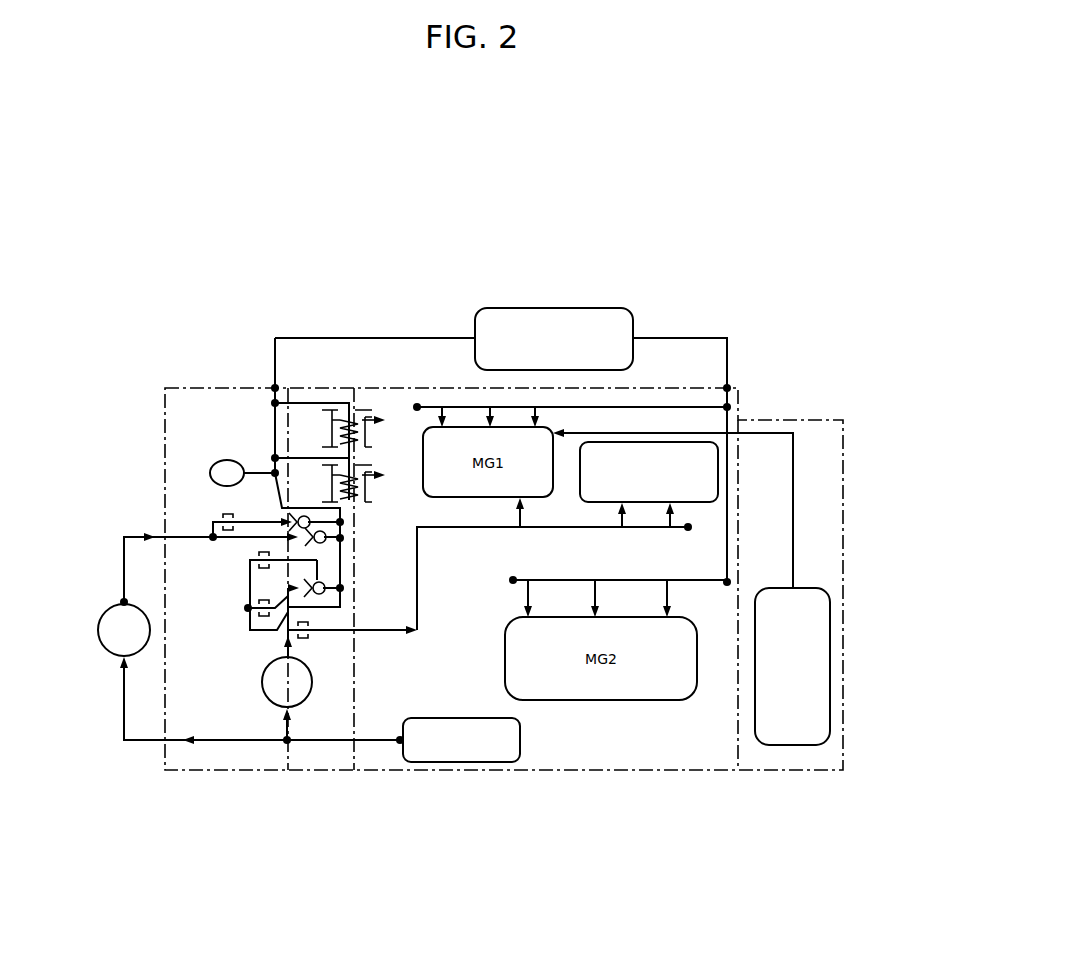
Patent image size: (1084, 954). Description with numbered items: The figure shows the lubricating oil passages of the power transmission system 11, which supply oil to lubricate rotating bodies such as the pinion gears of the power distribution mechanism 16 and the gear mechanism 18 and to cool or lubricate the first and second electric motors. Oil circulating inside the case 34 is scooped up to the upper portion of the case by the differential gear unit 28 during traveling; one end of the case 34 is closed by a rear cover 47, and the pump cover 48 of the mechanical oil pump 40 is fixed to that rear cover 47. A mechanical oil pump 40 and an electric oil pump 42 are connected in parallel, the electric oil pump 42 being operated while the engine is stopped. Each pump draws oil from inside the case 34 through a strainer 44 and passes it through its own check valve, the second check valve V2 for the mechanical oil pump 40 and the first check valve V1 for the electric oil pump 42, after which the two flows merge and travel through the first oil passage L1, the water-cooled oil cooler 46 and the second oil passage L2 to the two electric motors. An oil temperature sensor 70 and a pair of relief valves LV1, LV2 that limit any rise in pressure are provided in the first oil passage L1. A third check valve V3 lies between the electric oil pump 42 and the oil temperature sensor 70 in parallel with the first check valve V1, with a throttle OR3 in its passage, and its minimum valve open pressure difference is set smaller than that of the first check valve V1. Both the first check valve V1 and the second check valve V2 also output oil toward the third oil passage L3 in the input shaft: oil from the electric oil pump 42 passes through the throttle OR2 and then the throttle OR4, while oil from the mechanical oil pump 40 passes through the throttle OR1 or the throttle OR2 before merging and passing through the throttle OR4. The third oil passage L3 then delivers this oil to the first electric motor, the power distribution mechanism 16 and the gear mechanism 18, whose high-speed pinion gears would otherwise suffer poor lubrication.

The power transmission system 11 is at (736, 243).
The power distribution mechanism 16 is at (749, 472).
The gear mechanism 18 is at (718, 473).
The differential gear unit 28 is at (830, 717).
The case 34 is at (740, 392).
The mechanical oil pump 40 is at (312, 690).
The electric oil pump 42 is at (99, 638).
The strainer 44 is at (522, 740).
The water-cooled oil cooler 46 is at (597, 308).
The rear cover 47 is at (203, 772).
The pump cover 48 is at (330, 772).
The oil temperature sensor 70 is at (222, 459).
The first oil passage L1 is at (320, 338).
The second oil passage L2 is at (695, 338).
The third oil passage L3 is at (387, 633).
The relief valve LV1 is at (351, 470).
The relief valve LV2 is at (351, 410).
The throttle OR1 is at (258, 563).
The throttle OR2 is at (246, 607).
The throttle OR3 is at (226, 512).
The throttle OR4 is at (303, 640).
The first check valve V1 is at (326, 536).
The second check valve V2 is at (325, 586).
The third check valve V3 is at (310, 518).